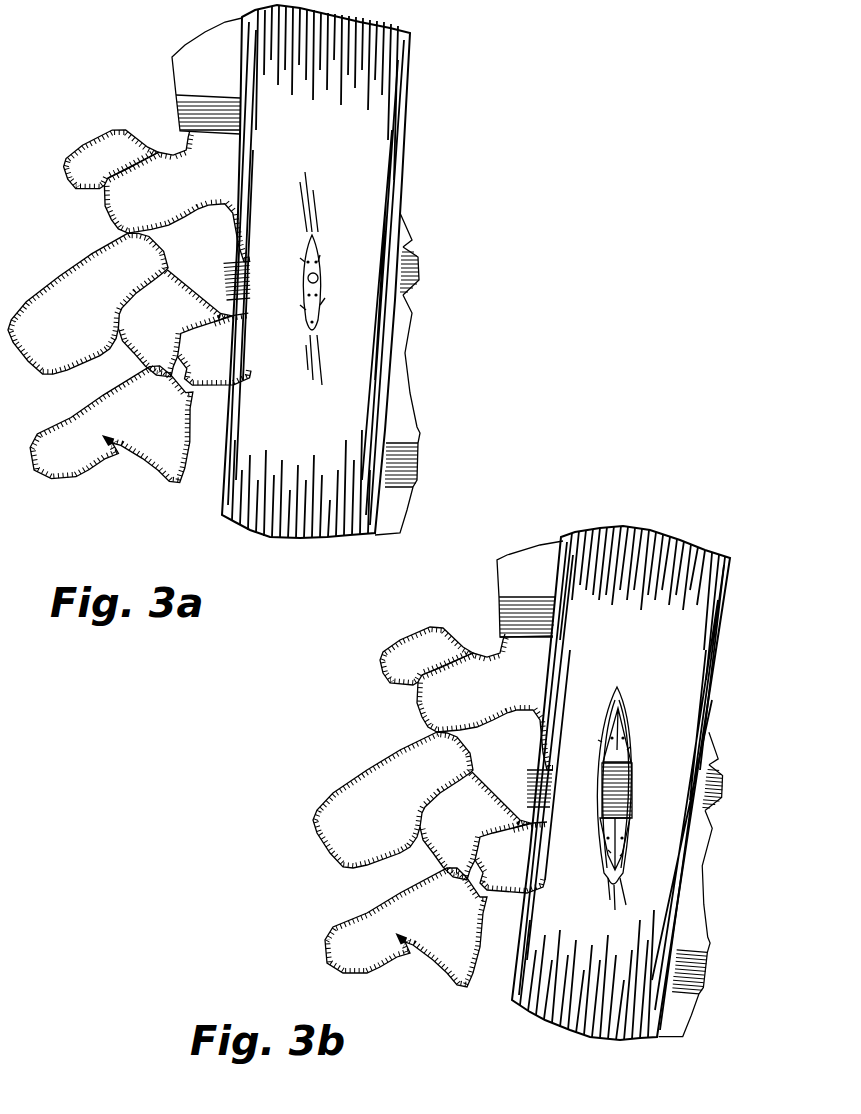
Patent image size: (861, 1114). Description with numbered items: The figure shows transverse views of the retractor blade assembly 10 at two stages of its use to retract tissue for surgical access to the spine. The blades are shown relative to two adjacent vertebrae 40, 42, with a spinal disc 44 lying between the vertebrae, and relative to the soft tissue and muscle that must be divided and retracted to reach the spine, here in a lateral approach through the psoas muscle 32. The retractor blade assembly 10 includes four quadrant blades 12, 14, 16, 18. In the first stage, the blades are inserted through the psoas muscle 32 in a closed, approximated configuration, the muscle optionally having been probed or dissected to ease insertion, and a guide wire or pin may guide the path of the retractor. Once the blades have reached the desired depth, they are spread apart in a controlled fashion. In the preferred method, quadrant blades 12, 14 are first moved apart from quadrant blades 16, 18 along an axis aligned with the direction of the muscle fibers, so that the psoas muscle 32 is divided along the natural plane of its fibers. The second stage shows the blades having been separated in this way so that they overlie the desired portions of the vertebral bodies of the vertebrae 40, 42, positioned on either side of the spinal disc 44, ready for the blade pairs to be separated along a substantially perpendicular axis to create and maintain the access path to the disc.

In FIG. 3A, the retractor blade assembly 10 is at (292, 234).
In FIG. 3B, the retractor blade assembly 10 is at (641, 717).
In FIG. 3A, the quadrant blade 12 is at (300, 258).
In FIG. 3B, the quadrant blade 12 is at (598, 740).
In FIG. 3A, the quadrant blade 14 is at (320, 255).
In FIG. 3B, the quadrant blade 14 is at (630, 747).
In FIG. 3A, the quadrant blade 16 is at (325, 298).
In FIG. 3B, the quadrant blade 16 is at (623, 853).
In FIG. 3A, the quadrant blade 18 is at (300, 305).
In FIG. 3B, the quadrant blade 18 is at (608, 850).
In FIG. 3A, the psoas muscle 32 is at (408, 117).
In FIG. 3B, the psoas muscle 32 is at (730, 608).
In FIG. 3A, the vertebra 40 is at (410, 228).
In FIG. 3B, the vertebra 40 is at (713, 753).
In FIG. 3A, the vertebra 42 is at (410, 358).
In FIG. 3B, the vertebra 42 is at (702, 857).
In FIG. 3A, the spinal disc 44 is at (418, 268).
In FIG. 3B, the spinal disc 44 is at (718, 787).